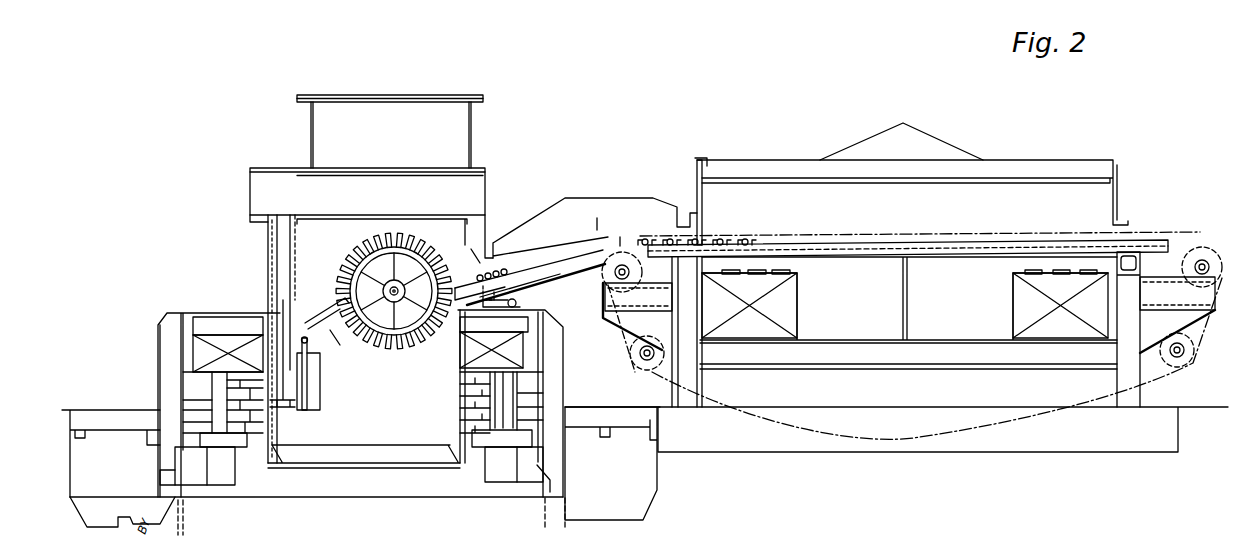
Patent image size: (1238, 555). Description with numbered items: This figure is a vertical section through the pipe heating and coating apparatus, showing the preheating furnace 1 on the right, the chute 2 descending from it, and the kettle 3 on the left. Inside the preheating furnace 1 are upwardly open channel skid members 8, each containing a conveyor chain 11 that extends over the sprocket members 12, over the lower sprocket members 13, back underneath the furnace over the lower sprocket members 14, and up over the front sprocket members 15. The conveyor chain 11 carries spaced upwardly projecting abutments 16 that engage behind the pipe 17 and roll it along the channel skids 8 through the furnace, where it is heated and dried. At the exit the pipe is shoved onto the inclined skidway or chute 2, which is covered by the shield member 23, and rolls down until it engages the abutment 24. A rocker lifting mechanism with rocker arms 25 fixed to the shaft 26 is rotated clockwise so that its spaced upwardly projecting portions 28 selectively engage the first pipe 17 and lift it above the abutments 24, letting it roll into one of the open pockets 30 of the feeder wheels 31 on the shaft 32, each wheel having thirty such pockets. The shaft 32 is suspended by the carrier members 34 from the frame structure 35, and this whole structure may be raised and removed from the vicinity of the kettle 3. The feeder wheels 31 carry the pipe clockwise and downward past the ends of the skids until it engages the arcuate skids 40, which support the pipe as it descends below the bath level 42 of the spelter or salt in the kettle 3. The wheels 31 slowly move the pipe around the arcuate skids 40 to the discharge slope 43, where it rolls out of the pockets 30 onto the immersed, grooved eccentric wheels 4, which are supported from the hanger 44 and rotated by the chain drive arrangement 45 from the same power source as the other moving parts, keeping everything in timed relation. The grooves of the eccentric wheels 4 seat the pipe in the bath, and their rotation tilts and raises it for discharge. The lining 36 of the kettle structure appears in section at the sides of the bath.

The preheating furnace 1 is at (838, 183).
The chute 2 is at (563, 285).
The kettle 3 is at (455, 392).
The eccentric conveyor wheel 4 is at (312, 352).
The channel skid member 8 is at (945, 258).
The conveyor chain 11 is at (617, 333).
The sprocket member 12 is at (603, 292).
The lower sprocket member 13 is at (630, 370).
The lower sprocket member 14 is at (1195, 362).
The front sprocket member 15 is at (1198, 244).
The abutment 16 is at (621, 252).
The pipe 17 is at (723, 238).
The shield member 23 is at (565, 198).
The abutment 24 is at (460, 281).
The rocker arm 25 is at (522, 298).
The shaft 26 is at (518, 303).
The upwardly projecting portion 28 is at (490, 292).
The pocket 30 is at (423, 243).
The feeder wheel 31 is at (376, 252).
The shaft 32 is at (383, 289).
The carrier member 34 is at (368, 227).
The frame structure 35 is at (485, 178).
The furnace lining 36 is at (212, 352).
The arcuate skid 40 is at (430, 355).
The bath level 42 is at (337, 345).
The discharge slope 43 is at (324, 320).
The hanger 44 is at (268, 243).
The chain drive arrangement 45 is at (277, 302).